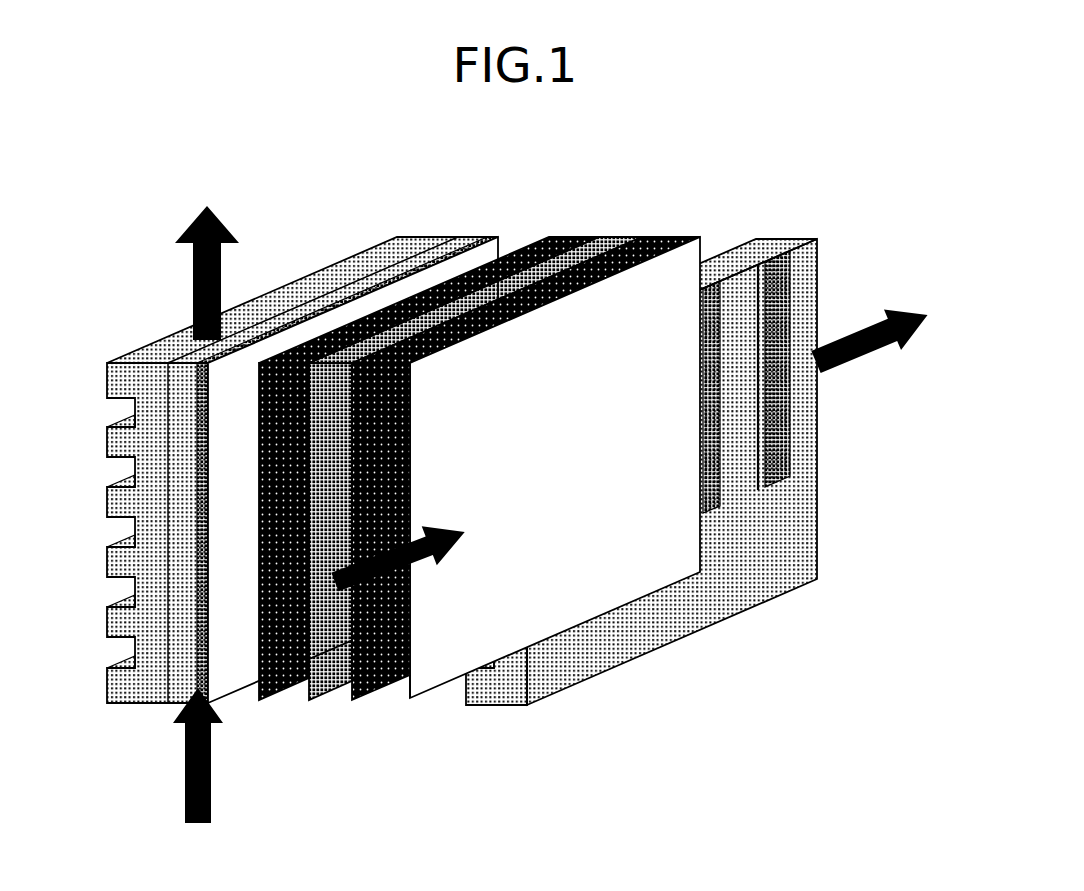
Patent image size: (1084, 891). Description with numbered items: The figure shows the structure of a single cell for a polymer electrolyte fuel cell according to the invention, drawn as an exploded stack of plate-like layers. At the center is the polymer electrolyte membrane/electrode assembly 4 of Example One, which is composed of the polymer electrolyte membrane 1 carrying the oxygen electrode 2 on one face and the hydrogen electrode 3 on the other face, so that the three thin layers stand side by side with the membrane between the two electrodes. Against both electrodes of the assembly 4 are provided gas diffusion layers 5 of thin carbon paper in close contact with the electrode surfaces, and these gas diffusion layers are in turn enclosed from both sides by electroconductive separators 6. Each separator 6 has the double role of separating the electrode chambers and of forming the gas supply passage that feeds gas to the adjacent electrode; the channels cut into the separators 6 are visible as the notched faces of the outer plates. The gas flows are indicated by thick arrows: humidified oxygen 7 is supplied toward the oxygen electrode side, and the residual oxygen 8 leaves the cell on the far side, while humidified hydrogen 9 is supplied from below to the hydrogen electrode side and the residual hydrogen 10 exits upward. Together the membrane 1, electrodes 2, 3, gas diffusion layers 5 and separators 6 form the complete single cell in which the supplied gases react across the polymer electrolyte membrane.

The polymer electrolyte membrane 1 is at (308, 702).
The oxygen electrode 2 is at (355, 700).
The hydrogen electrode 3 is at (258, 700).
The polymer electrolyte membrane/electrode assembly 4 is at (479, 551).
The gas diffusion layer 5 is at (497, 238).
The separator 6 is at (107, 432).
The humidified oxygen 7 is at (378, 564).
The residual oxygen 8 is at (881, 335).
The humidified hydrogen 9 is at (198, 779).
The residual hydrogen 10 is at (207, 253).